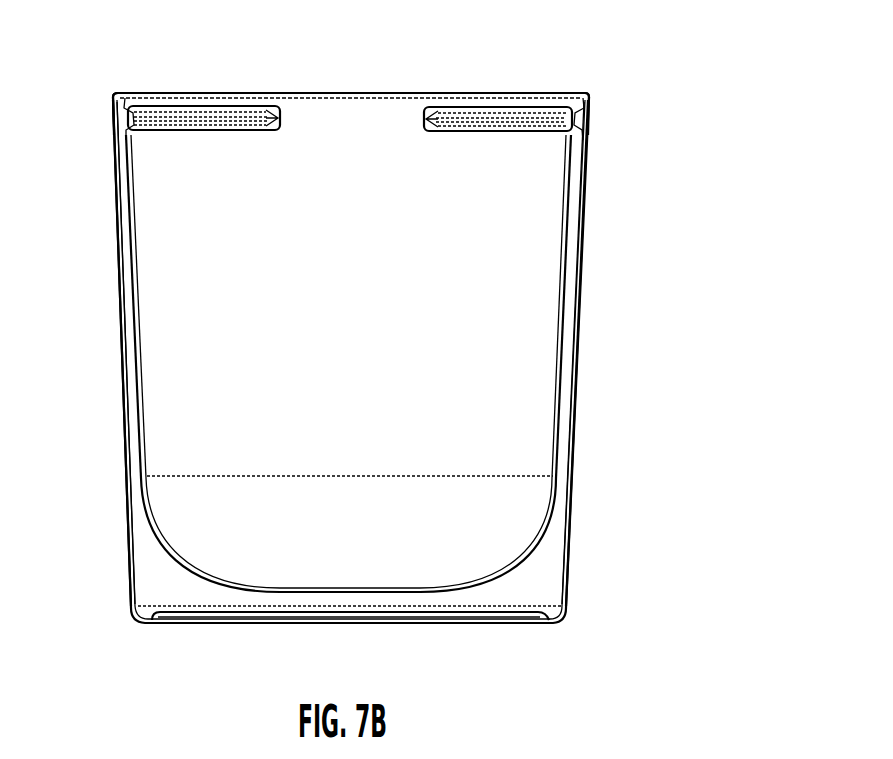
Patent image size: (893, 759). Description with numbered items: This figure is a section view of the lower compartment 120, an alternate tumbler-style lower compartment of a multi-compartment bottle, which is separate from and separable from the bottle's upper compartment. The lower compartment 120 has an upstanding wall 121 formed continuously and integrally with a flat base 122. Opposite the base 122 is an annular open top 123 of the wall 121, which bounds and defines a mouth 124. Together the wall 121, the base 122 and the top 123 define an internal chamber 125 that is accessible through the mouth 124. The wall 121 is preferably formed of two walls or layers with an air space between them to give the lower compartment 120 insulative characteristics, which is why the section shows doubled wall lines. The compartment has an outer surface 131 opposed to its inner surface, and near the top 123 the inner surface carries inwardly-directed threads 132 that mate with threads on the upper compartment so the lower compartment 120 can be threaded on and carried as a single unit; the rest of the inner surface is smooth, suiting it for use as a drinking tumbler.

The lower compartment 120 is at (737, 75).
The upstanding wall 121 is at (575, 320).
The flat base 122 is at (545, 620).
The annular open top 123 is at (590, 93).
The mouth 124 is at (330, 124).
The internal chamber 125 is at (415, 186).
The outer surface 131 is at (128, 432).
The inwardly-directed threads 132 is at (200, 131).